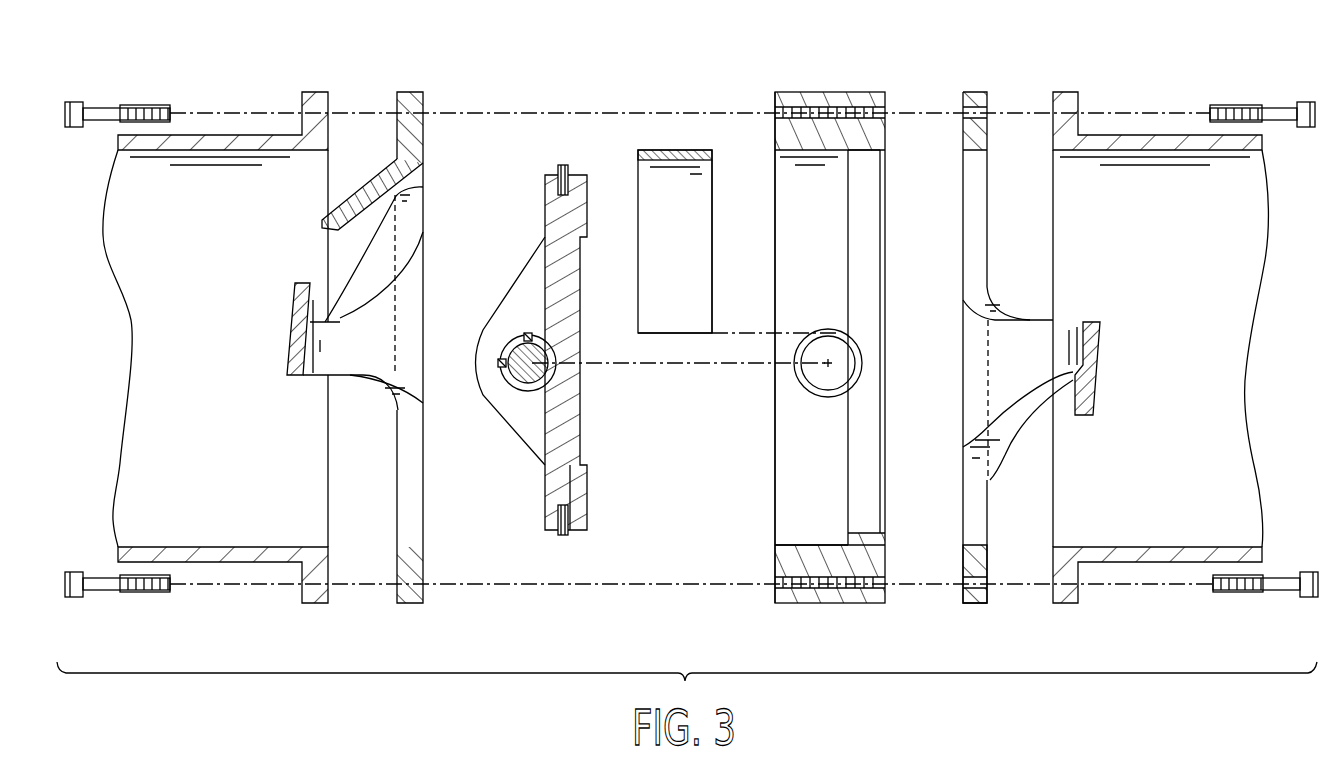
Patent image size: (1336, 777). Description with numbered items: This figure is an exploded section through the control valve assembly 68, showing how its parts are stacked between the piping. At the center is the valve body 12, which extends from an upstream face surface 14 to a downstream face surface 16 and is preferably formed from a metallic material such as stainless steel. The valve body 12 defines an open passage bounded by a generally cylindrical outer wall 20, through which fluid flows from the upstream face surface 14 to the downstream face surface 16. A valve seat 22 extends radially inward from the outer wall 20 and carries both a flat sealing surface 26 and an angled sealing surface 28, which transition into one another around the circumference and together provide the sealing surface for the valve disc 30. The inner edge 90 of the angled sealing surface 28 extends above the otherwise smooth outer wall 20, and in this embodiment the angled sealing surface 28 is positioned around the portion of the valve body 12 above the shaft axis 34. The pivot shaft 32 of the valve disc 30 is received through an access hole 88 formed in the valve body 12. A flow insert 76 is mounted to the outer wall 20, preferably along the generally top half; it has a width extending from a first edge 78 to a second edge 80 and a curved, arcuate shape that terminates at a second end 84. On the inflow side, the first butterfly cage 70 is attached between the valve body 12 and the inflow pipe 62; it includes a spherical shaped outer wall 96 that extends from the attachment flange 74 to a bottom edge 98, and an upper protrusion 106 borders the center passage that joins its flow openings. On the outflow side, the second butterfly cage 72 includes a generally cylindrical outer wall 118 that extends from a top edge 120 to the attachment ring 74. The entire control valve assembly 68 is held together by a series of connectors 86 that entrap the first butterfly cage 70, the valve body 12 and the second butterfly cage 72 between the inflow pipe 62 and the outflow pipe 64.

The valve body 12 is at (836, 328).
The upstream face surface 14 is at (775, 133).
The downstream face surface 16 is at (885, 127).
The outer wall 20 is at (790, 545).
The valve seat 22 is at (870, 158).
The flat sealing surface 26 is at (862, 533).
The angled sealing surface 28 is at (880, 178).
The valve disc 30 is at (523, 350).
The pivot shaft 32 is at (515, 385).
The shaft axis 34 is at (832, 378).
The inflow pipe 62 is at (240, 140).
The outflow pipe 64 is at (1140, 140).
The control valve assembly 68 is at (836, 303).
The first butterfly cage 70 is at (716, 331).
The second butterfly cage 72 is at (975, 92).
The attachment flange 74 is at (423, 128).
The flow insert 76 is at (678, 237).
The first edge 78 is at (715, 240).
The second edge 80 is at (637, 180).
The second end 84 is at (675, 335).
The connectors 86 is at (103, 106).
The access hole 88 is at (861, 375).
The inner edge 90 is at (848, 160).
The spherical shaped outer wall 96 is at (296, 322).
The bottom edge 98 is at (291, 378).
The upper protrusion 106 is at (318, 224).
The cylindrical outer wall 118 is at (1098, 366).
The top edge 120 is at (1090, 318).